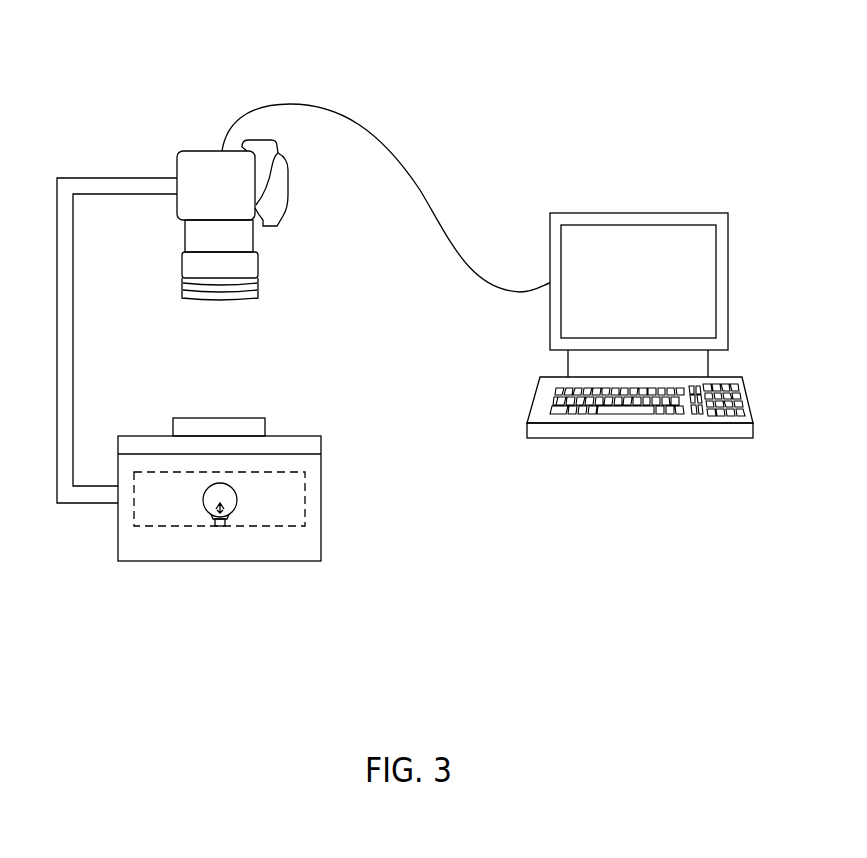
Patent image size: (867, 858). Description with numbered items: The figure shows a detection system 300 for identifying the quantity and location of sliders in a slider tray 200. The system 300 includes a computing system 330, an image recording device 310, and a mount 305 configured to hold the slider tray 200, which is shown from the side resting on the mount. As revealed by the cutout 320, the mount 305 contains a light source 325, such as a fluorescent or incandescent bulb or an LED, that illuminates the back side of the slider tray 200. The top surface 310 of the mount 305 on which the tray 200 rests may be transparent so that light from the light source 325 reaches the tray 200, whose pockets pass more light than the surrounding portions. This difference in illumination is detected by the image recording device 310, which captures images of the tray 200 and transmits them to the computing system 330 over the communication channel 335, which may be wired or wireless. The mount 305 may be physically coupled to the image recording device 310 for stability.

The detection system 300 is at (470, 62).
The image recording device 310 is at (258, 262).
The cutout 320 is at (134, 505).
The communication channel 335 is at (445, 207).
The computing system 330 is at (692, 213).
The slider tray 200 is at (267, 426).
The mount 305 is at (321, 498).
The light source 325 is at (237, 503).